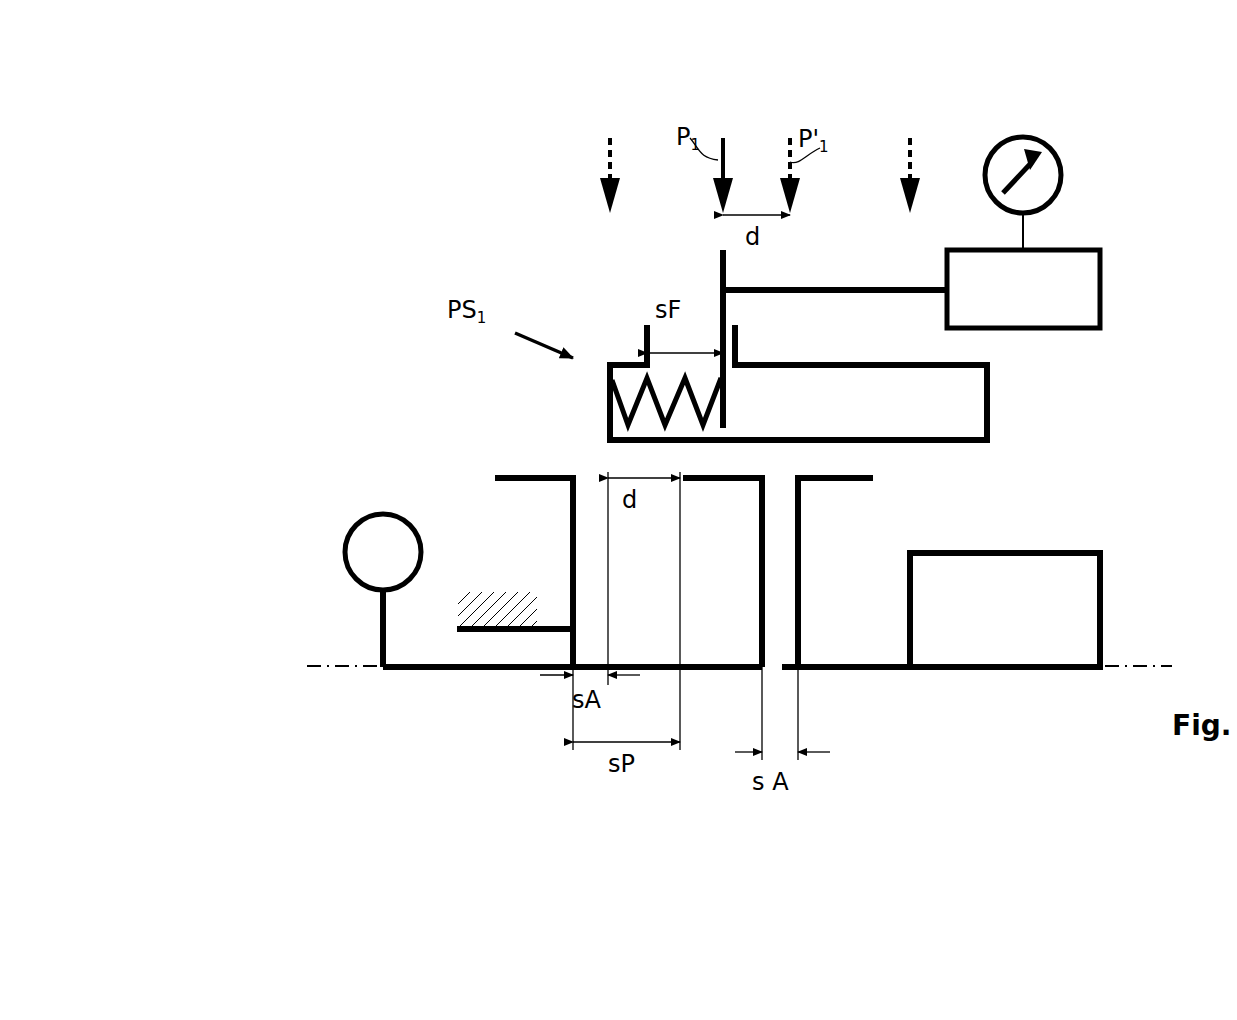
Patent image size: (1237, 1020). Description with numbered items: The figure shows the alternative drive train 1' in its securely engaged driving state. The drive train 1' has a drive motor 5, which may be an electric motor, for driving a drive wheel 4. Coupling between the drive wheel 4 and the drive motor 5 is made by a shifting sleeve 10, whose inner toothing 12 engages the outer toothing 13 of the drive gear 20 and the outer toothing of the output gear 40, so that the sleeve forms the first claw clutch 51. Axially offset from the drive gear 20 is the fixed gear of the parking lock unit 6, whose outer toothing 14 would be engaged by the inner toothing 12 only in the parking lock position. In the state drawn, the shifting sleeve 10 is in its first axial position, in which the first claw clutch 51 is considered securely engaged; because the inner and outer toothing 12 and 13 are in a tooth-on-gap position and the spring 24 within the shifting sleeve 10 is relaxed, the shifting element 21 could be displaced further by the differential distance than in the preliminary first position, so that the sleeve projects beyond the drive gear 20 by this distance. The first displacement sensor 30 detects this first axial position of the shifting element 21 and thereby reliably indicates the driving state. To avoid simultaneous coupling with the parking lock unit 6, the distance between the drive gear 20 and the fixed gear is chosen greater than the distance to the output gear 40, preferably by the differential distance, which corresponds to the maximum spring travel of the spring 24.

The drive train 1' is at (211, 129).
The drive wheel 4 is at (352, 535).
The drive motor 5 is at (1085, 577).
The parking lock unit 6 is at (422, 464).
The shifting sleeve 10 is at (854, 382).
The inner toothing 12 is at (733, 440).
The outer toothing 13 is at (725, 478).
The outer toothing 14 is at (540, 480).
The drive gear 20 is at (758, 577).
The shifting element 21 is at (723, 270).
The spring 24 is at (633, 392).
The first displacement sensor 30 is at (1052, 175).
The output gear 40 is at (800, 590).
The first claw clutch 51 is at (582, 457).